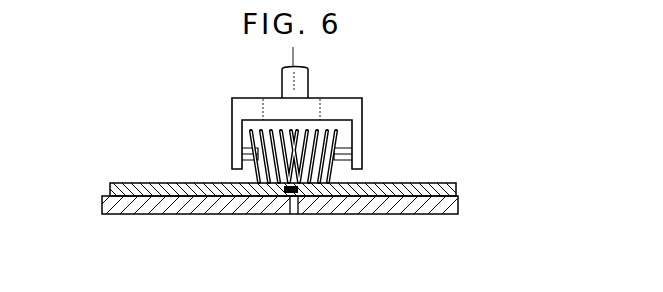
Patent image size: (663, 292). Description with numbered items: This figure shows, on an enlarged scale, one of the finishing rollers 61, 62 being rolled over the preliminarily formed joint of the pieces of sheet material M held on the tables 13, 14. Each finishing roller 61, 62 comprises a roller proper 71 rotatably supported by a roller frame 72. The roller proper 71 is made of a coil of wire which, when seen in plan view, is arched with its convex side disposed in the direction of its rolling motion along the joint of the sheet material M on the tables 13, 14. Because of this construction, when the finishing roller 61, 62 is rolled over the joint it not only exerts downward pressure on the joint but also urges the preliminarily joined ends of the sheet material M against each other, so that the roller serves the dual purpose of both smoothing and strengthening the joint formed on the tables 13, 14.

The finishing roller 61 is at (264, 114).
The finishing roller 62 is at (264, 114).
The roller frame 72 is at (346, 99).
The roller proper 71 is at (334, 137).
The table 13 is at (285, 198).
The table 14 is at (424, 213).
The sheet material M is at (163, 183).